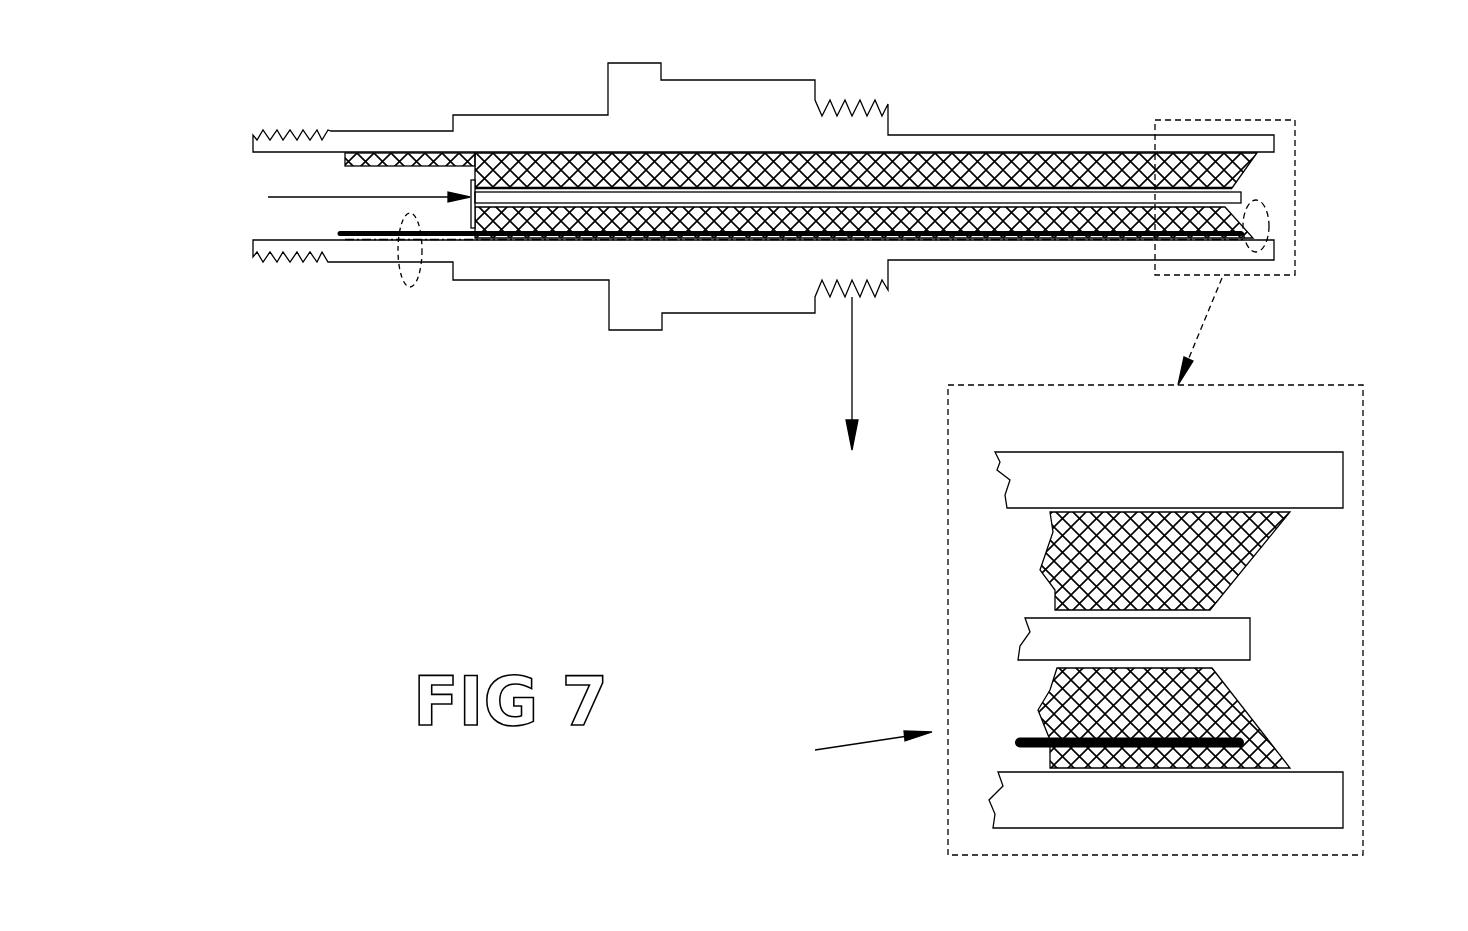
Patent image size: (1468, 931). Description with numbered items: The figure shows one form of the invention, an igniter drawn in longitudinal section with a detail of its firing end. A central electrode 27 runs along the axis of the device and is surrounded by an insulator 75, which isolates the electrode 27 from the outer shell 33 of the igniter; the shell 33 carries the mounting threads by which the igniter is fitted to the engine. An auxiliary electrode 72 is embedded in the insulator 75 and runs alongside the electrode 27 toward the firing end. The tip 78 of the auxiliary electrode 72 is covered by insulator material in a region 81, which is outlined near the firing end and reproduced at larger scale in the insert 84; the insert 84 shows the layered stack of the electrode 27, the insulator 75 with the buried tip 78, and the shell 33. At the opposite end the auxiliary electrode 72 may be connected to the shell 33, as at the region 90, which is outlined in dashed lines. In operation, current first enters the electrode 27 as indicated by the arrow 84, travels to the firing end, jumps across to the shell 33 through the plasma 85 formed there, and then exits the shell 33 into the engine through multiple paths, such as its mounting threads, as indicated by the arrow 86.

The electrode 27 is at (697, 197).
The shell 33 is at (660, 280).
The auxiliary electrode 72 is at (510, 242).
The insulator 75 is at (366, 162).
The tip 78 is at (1243, 742).
The region 81 is at (1248, 277).
The arrow / insert 84 is at (313, 197).
The plasma 85 is at (1248, 258).
The arrow 86 is at (852, 354).
The region 90 is at (404, 287).